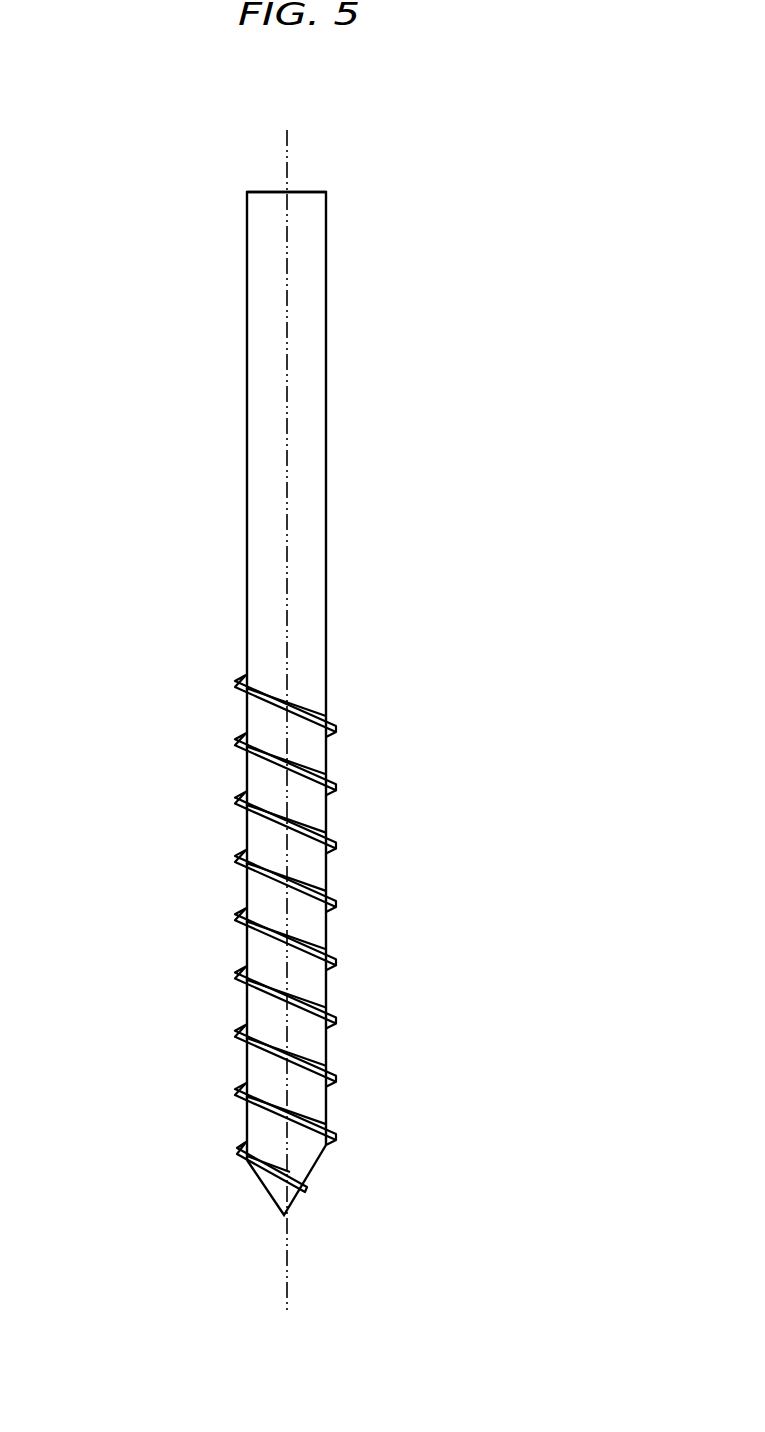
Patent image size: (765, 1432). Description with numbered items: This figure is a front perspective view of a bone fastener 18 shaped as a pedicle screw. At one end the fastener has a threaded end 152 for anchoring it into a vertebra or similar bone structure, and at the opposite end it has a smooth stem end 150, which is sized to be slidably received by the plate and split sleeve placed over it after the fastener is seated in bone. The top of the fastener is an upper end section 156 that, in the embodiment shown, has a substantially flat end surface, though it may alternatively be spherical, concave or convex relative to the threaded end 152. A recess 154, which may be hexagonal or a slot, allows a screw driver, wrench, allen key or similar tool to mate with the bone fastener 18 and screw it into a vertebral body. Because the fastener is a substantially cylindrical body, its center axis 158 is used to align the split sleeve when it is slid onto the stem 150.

The bone fastener 18 is at (156, 349).
The stem end 150 is at (326, 455).
The threaded end 152 is at (337, 846).
The recess 154 is at (290, 191).
The upper end section 156 is at (265, 190).
The center axis 158 is at (290, 154).